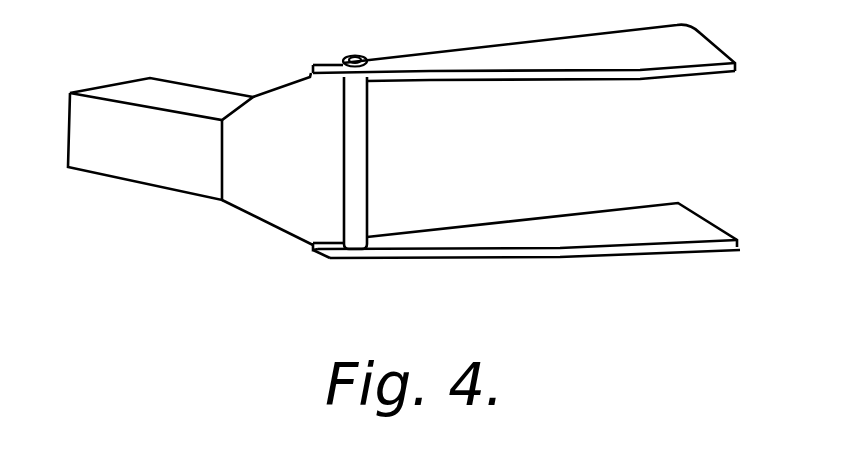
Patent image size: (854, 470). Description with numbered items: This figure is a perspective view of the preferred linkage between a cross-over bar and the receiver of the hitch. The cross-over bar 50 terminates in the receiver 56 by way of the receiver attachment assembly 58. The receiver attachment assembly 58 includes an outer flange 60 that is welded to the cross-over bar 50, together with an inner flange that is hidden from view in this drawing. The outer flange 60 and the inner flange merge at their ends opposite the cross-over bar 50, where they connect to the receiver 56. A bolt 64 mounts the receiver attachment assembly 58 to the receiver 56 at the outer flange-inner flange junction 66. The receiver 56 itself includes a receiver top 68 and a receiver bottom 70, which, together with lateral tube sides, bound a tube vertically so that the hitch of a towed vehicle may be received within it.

The cross-over bar 50 is at (148, 94).
The receiver 56 is at (673, 262).
The receiver attachment assembly 58 is at (320, 267).
The outer flange 60 is at (267, 203).
The bolt 64 is at (347, 58).
The outer flange-inner flange junction 66 is at (378, 150).
The receiver top 68 is at (677, 40).
The receiver bottom 70 is at (600, 225).